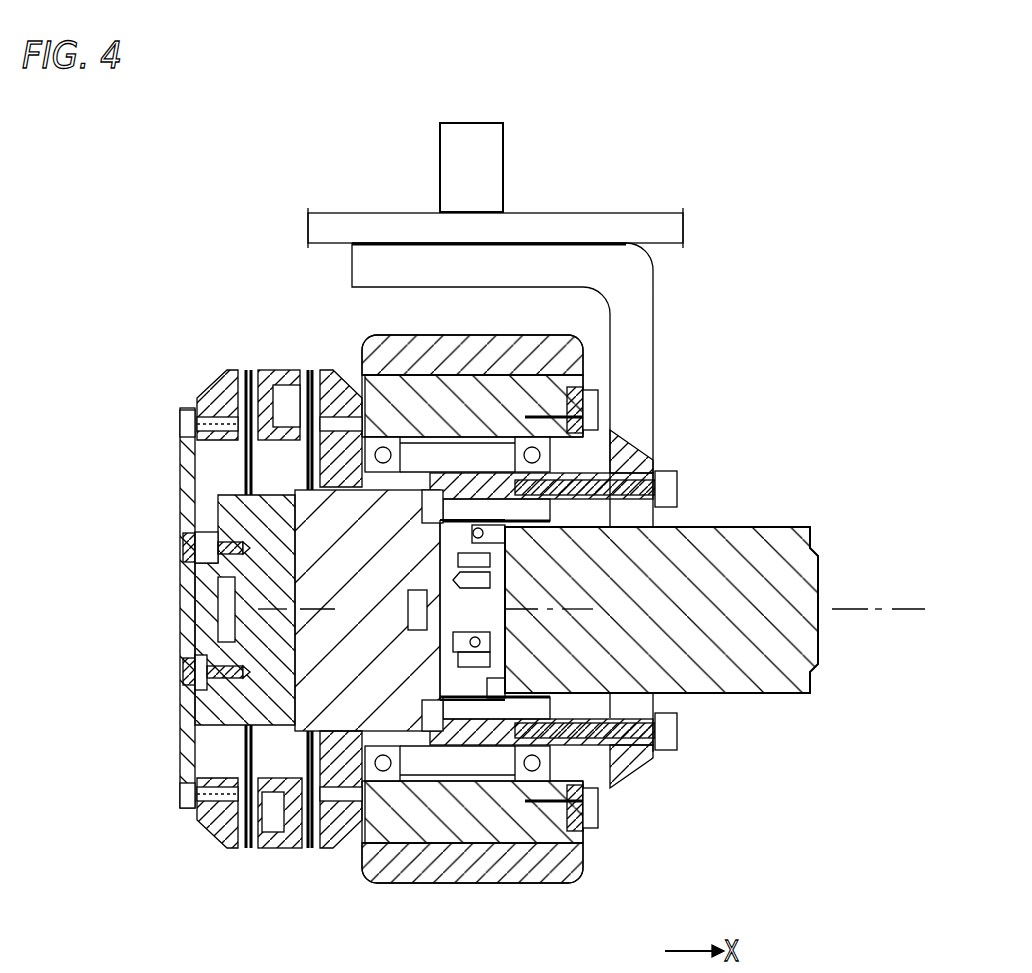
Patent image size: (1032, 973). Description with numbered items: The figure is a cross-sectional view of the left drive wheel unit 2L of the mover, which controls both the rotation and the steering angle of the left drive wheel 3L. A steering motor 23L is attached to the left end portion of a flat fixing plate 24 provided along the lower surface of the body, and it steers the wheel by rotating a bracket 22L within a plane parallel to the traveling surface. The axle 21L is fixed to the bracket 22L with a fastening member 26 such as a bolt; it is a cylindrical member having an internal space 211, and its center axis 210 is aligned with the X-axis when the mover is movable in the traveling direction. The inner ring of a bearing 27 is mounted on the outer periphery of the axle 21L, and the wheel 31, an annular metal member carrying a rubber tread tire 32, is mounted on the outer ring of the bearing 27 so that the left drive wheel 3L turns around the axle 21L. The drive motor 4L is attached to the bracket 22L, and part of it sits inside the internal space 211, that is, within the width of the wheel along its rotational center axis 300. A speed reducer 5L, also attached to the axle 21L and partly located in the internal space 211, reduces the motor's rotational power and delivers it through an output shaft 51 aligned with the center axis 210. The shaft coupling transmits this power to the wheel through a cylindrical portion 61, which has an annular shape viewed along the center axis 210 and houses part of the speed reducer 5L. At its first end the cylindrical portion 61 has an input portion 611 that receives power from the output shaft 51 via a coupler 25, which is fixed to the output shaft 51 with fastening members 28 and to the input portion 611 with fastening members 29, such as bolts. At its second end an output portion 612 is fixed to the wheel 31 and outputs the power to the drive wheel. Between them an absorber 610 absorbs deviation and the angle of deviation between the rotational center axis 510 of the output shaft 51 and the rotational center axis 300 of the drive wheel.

The left drive wheel unit 2L is at (752, 184).
The axle 21L is at (468, 485).
The bracket 22L is at (644, 310).
The steering motor 23L is at (497, 160).
The fixing plate 24 is at (632, 224).
The coupler 25 is at (188, 757).
The fastening member 26 is at (680, 735).
The bearing 27 is at (578, 782).
The fastening members 28 is at (190, 550).
The fastening members 29 is at (188, 427).
The left drive wheel 3L is at (466, 884).
The wheel 31 is at (508, 805).
The tread tire 32 is at (421, 884).
The drive motor 4L is at (782, 693).
The speed reducer 5L is at (235, 513).
The output shaft 51 is at (232, 713).
The rotational center axis 510 is at (310, 605).
The cylindrical portion 61 is at (279, 848).
The absorber 610 is at (280, 380).
The input portion 611 is at (215, 392).
The output portion 612 is at (332, 383).
The center axis 210 is at (900, 607).
The internal space 211 is at (528, 715).
The rotational center axis 300 is at (574, 607).